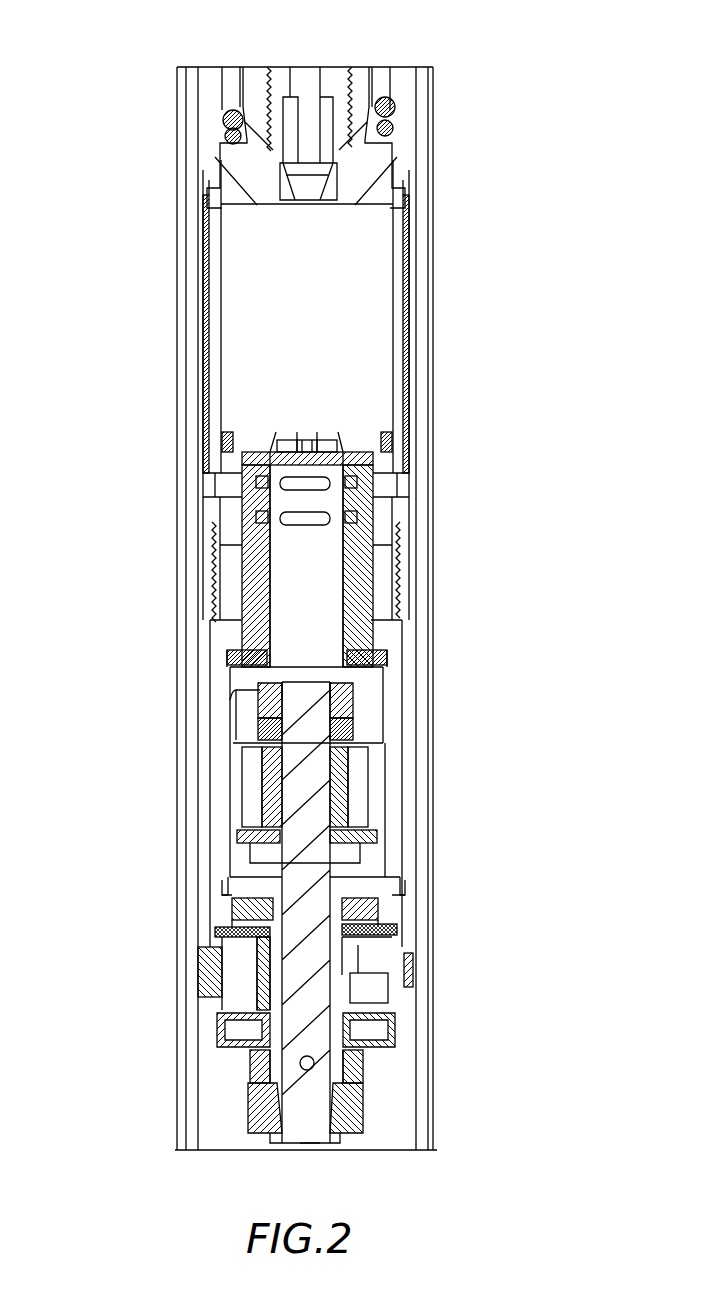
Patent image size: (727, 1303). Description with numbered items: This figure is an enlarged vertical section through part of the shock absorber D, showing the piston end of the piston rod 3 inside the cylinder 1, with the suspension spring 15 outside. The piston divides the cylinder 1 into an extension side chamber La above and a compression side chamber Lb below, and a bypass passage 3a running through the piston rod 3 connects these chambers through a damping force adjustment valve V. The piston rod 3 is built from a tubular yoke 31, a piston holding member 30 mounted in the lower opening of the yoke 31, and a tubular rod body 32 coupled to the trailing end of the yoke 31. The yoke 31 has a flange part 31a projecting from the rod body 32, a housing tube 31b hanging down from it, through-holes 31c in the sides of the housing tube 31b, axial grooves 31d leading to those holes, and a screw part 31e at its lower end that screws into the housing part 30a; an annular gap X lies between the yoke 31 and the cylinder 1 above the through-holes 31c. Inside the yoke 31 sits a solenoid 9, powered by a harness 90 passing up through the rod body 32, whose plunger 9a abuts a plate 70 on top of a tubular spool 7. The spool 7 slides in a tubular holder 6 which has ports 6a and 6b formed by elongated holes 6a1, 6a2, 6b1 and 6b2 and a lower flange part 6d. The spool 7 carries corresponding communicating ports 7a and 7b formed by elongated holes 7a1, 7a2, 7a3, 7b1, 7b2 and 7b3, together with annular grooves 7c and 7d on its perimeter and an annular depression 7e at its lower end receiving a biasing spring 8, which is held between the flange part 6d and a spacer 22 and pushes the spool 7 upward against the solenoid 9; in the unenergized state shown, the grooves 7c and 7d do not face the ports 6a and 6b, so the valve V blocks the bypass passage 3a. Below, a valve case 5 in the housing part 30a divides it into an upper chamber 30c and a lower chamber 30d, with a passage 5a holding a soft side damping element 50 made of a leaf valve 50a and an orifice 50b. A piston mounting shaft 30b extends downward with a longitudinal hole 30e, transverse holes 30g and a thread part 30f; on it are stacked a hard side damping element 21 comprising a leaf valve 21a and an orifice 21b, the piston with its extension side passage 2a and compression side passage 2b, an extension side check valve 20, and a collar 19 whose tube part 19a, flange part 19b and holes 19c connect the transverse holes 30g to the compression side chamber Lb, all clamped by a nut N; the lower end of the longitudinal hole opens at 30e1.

The shock absorber D is at (452, 82).
The suspension spring 15 is at (426, 112).
The cylinder 1 is at (432, 180).
The yoke 31 is at (420, 235).
The flange part 31a is at (215, 150).
The housing tube 31b is at (210, 228).
The grooves 31d is at (212, 278).
The extension side chamber La is at (205, 168).
The annular gap X is at (420, 290).
The solenoid 9 is at (412, 362).
The piston rod 3 is at (355, 67).
The rod body 32 is at (280, 67).
The harness 90 is at (307, 80).
The annular groove 7c is at (226, 442).
The communicating port 7a is at (380, 500).
The elongated hole 7a1 is at (285, 440).
The elongated hole 7a2 is at (300, 440).
The elongated hole 7a3 is at (330, 440).
The plunger 9a is at (306, 440).
The plate 70 is at (348, 440).
The communicating port 7b is at (250, 560).
The elongated hole 7b1 is at (310, 490).
The elongated hole 7b2 is at (318, 525).
The elongated hole 7b3 is at (340, 560).
The annular groove 7d is at (240, 500).
The annular depression 7e is at (385, 690).
The holder 6 is at (405, 598).
The port 6a is at (215, 495).
The elongated hole 6a1 is at (255, 483).
The elongated hole 6a2 is at (360, 485).
The port 6b is at (230, 545).
The elongated hole 6b1 is at (256, 520).
The elongated hole 6b2 is at (360, 520).
The flange part 6d is at (392, 655).
The spool 7 is at (375, 590).
The damping force adjustment valve V is at (395, 470).
The through-holes 31c is at (232, 478).
The screw part 31e is at (212, 600).
The spacer 22 is at (390, 672).
The biasing spring 8 is at (230, 680).
The housing part 30a is at (400, 720).
The soft side damping element 50 is at (258, 705).
The leaf valve 50a is at (258, 730).
The orifice 50b is at (356, 735).
The upper chamber 30c is at (270, 700).
The piston holding member 30 is at (412, 815).
The valve case 5 is at (388, 770).
The passage 5a is at (240, 780).
The lower chamber 30d is at (250, 860).
The bypass passage 3a is at (268, 905).
The leaf valve 21a is at (240, 920).
The hard side damping element 21 is at (382, 912).
The orifice 21b is at (400, 925).
The extension side passage 2a is at (225, 955).
The compression side passage 2b is at (400, 945).
The piston mounting shaft 30b is at (200, 975).
The longitudinal hole 30e is at (414, 972).
The extension side check valve 20 is at (220, 1030).
The tube part 19a is at (250, 1060).
The holes 19c is at (250, 1070).
The collar 19 is at (368, 1100).
The flange part 19b is at (365, 1110).
The thread part 30f is at (248, 1120).
The transverse holes 30g is at (305, 1056).
The piston rod end 30e1 is at (318, 1143).
The compression side chamber Lb is at (400, 1042).
The nut N is at (365, 1125).